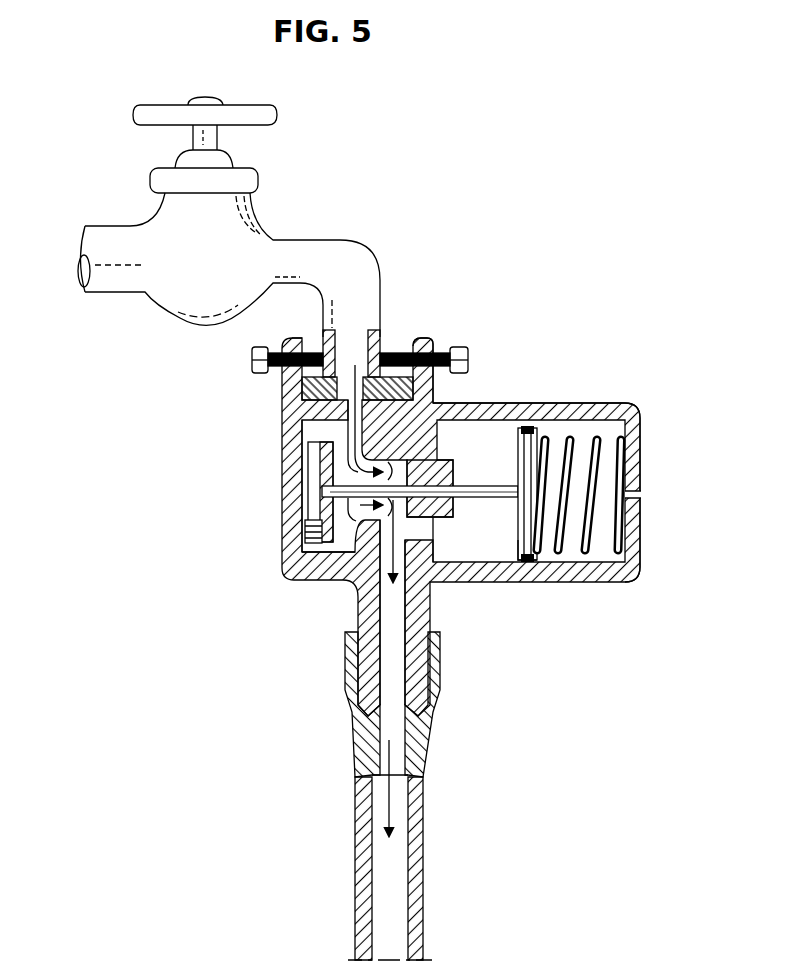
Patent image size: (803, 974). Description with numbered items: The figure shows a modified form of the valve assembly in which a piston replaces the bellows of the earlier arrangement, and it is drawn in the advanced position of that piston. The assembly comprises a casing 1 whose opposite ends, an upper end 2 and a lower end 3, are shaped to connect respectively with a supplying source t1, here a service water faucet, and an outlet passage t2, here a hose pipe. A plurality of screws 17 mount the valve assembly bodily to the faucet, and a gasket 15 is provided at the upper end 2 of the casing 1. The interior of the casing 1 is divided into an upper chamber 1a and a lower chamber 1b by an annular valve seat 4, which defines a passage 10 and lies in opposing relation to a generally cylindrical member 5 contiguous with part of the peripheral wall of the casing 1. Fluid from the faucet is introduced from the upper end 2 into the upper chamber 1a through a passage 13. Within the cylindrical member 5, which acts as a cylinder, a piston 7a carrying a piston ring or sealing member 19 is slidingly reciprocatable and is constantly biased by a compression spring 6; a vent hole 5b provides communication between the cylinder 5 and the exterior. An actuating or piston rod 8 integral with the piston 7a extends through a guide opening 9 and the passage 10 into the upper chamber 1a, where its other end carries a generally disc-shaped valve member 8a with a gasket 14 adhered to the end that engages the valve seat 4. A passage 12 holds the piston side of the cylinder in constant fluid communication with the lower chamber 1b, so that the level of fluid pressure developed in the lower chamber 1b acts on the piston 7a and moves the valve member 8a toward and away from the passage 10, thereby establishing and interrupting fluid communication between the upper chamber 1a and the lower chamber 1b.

The supplying source t1 is at (274, 257).
The outlet passage t2 is at (362, 822).
The casing 1 is at (284, 558).
The upper chamber 1a is at (300, 513).
The lower chamber 1b is at (441, 403).
The upper end of casing 2 is at (400, 338).
The lower end of casing 3 is at (350, 672).
The annular valve seat 4 is at (357, 522).
The cylindrical member 5 is at (597, 412).
The vent hole 5b is at (642, 493).
The compression spring 6 is at (583, 552).
The piston 7a is at (518, 547).
The actuating rod 8 is at (478, 487).
The valve member 8a is at (315, 467).
The guide opening 9 is at (455, 525).
The passage 10 is at (345, 545).
The passage 12 is at (430, 537).
The passage 13 is at (343, 418).
The gasket 14 is at (328, 540).
The gasket 15 is at (300, 386).
The screws 17 is at (455, 347).
The sealing member 19 is at (538, 427).